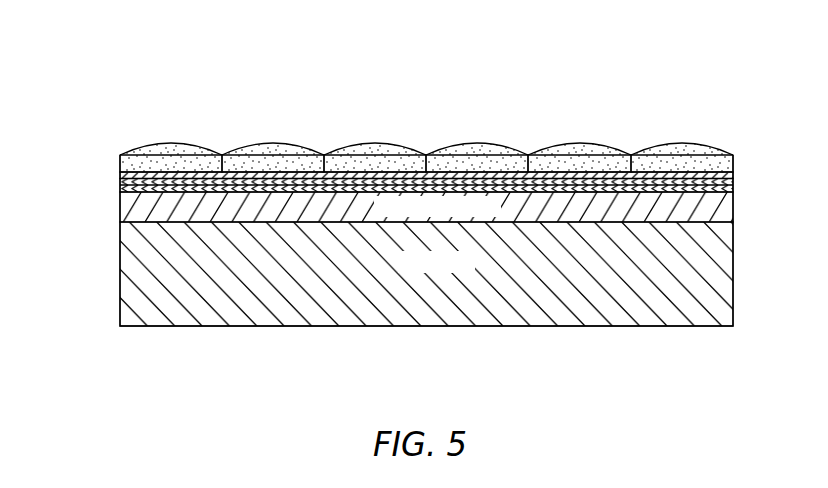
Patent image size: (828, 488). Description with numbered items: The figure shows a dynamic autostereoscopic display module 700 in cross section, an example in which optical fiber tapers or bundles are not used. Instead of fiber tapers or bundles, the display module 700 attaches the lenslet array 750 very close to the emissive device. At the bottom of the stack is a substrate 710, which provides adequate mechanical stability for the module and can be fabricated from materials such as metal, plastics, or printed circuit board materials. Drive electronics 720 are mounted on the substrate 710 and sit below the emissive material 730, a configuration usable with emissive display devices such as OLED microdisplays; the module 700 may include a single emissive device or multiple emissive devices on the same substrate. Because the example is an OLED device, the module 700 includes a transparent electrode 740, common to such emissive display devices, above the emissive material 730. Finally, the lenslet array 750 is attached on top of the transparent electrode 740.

The display module 700 is at (175, 352).
The substrate 710 is at (733, 305).
The drive electronics 720 is at (733, 208).
The emissive material 730 is at (120, 184).
The transparent electrode 740 is at (733, 175).
The lenslet array 750 is at (160, 133).